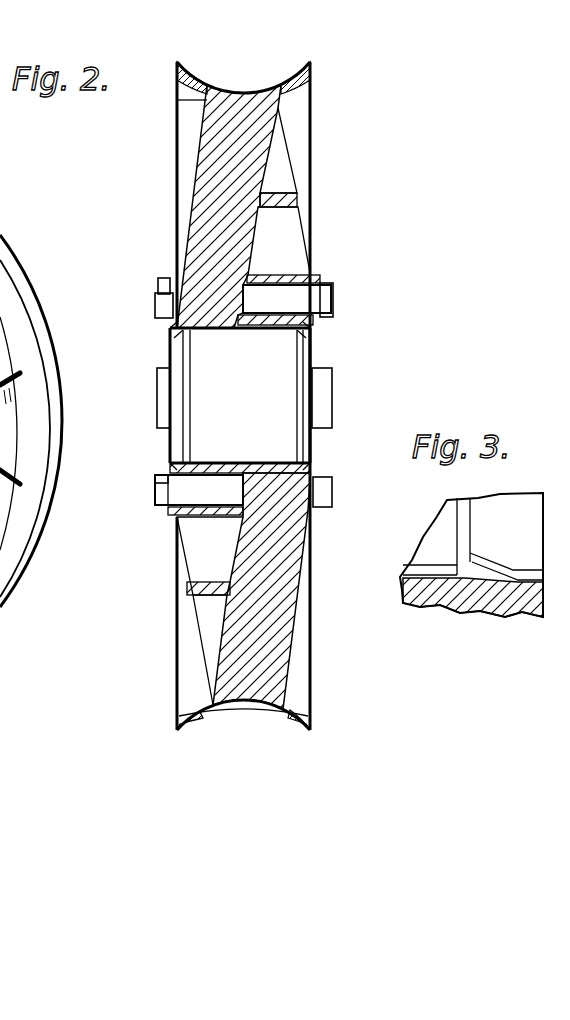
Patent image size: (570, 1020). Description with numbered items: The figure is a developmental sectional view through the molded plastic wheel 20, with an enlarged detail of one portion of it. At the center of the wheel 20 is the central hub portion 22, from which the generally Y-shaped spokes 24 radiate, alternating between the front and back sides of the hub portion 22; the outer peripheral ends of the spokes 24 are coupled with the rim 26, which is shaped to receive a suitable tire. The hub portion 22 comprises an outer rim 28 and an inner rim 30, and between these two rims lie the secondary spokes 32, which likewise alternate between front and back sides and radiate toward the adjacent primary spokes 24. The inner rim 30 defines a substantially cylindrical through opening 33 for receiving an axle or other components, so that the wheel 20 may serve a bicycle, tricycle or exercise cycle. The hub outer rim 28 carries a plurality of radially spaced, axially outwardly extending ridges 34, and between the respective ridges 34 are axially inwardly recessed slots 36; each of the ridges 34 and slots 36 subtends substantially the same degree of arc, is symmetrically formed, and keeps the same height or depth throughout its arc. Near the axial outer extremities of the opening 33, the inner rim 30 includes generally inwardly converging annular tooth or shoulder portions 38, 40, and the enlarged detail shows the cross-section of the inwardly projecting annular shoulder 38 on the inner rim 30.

In FIG. 2, the wheel 20 is at (340, 312).
In FIG. 2, the central hub portion 22 is at (162, 529).
In FIG. 2, the spokes 24 is at (212, 176).
In FIG. 2, the rim 26 is at (240, 93).
In FIG. 2, the outer rim 28 is at (320, 264).
In FIG. 2, the inner rim 30 is at (334, 300).
In FIG. 3, the inner rim 30 is at (498, 610).
In FIG. 2, the secondary spokes 32 is at (188, 297).
In FIG. 2, the through opening 33 is at (254, 424).
In FIG. 2, the ridges 34 is at (164, 278).
In FIG. 2, the slots 36 is at (166, 344).
In FIG. 2, the annular tooth or shoulder portion 38 is at (288, 337).
In FIG. 3, the annular tooth or shoulder portion 38 is at (490, 553).
In FIG. 2, the annular tooth or shoulder portion 40 is at (191, 333).